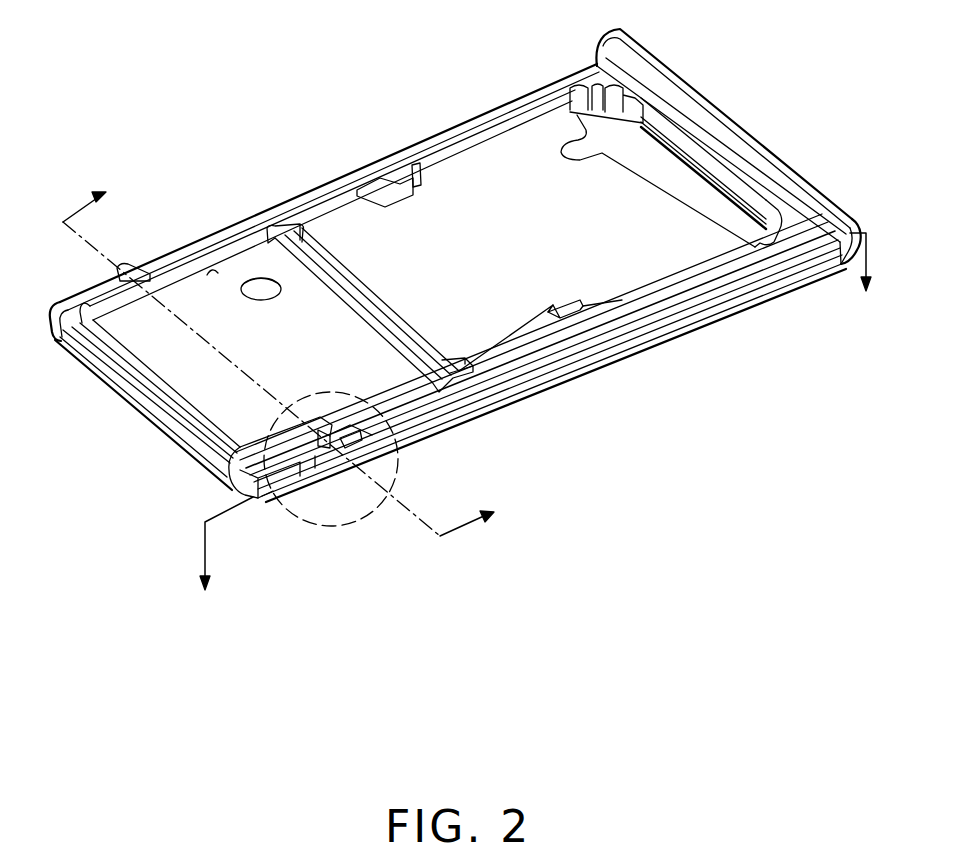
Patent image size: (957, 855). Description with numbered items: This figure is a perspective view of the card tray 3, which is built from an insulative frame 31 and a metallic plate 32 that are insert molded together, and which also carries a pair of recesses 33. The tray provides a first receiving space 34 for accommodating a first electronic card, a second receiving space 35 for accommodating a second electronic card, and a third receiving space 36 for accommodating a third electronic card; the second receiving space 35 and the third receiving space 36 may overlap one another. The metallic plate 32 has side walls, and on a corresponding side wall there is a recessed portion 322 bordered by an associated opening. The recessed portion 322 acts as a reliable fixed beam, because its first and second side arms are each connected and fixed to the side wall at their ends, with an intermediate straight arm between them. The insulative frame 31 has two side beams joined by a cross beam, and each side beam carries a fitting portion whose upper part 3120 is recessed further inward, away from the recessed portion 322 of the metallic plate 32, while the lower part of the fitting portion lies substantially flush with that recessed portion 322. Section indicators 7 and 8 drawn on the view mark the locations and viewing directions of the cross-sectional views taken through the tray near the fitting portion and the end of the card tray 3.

The card tray 3 is at (372, 62).
The insulative frame 31 is at (793, 232).
The metallic plate 32 is at (505, 188).
The recesses 33 is at (125, 275).
The first receiving space 34 is at (210, 372).
The second receiving space 35 is at (385, 247).
The third receiving space 36 is at (620, 255).
The upper part 3120 is at (352, 448).
The recessed portion 322 is at (322, 465).
The section line 7- 7 is at (280, 361).
The section line 8- 8 is at (533, 426).